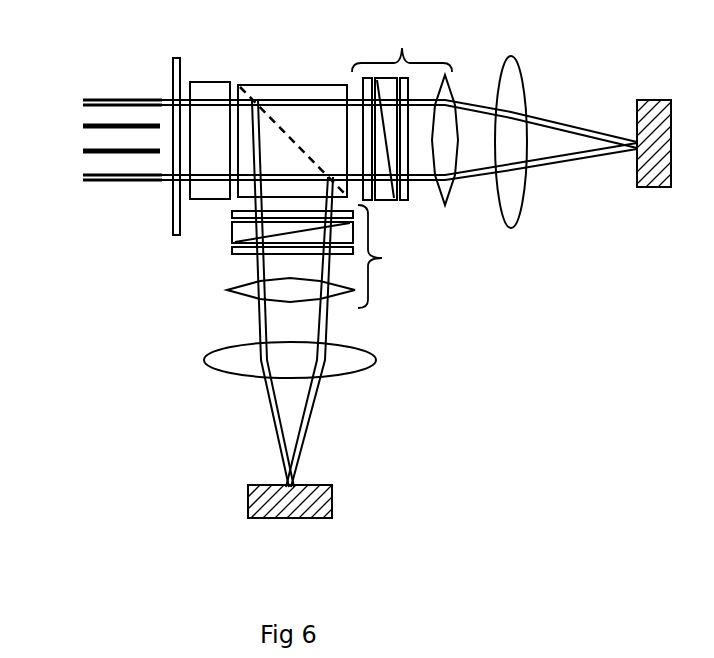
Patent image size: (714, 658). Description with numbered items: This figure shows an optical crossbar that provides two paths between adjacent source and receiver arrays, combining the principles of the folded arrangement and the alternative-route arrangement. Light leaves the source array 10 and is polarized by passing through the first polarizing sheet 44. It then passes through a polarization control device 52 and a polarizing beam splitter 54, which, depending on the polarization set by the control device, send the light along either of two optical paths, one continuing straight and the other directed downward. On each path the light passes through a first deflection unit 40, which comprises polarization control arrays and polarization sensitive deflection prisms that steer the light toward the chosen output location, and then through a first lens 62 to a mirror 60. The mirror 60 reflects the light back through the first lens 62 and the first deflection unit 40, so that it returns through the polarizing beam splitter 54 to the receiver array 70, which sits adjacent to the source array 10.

The source array 10 is at (92, 111).
The receiver array 70 is at (92, 165).
The first polarizing sheet 44 is at (169, 132).
The polarization control device 52 is at (210, 123).
The polarizing beam splitter 54 is at (292, 125).
The first deflection unit 40 is at (342, 162).
The first lens 62 is at (342, 217).
The mirror 60 is at (431, 309).